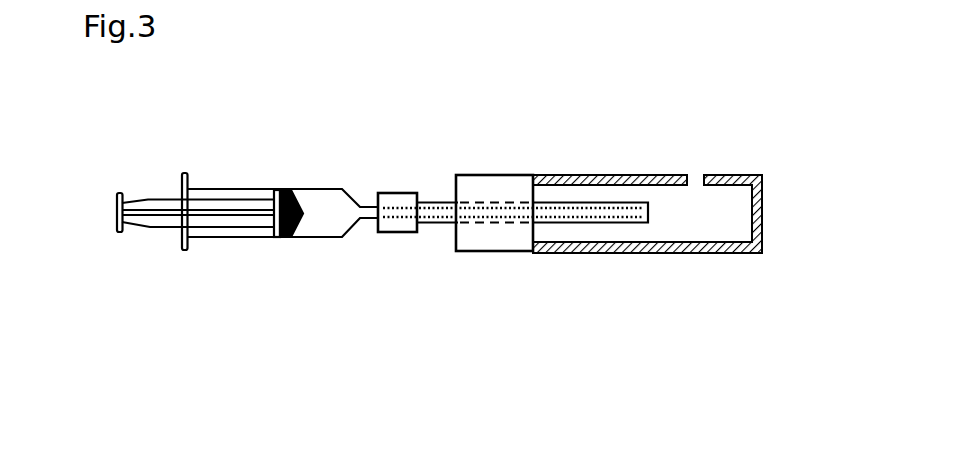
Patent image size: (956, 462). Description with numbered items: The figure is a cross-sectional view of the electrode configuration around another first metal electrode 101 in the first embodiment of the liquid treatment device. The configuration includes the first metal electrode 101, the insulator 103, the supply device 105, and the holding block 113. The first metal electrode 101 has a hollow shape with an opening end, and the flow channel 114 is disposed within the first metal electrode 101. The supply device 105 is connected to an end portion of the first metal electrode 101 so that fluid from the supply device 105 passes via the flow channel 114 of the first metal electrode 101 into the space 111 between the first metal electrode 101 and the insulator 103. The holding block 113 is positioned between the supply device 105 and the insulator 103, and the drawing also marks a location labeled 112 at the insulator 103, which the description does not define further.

The first metal electrode 101 is at (437, 203).
The insulator 103 is at (595, 250).
The supply device 105 is at (313, 228).
The space 111 is at (692, 218).
The opening 112 is at (697, 172).
The holding block 113 is at (490, 235).
The flow channel 114 is at (395, 215).